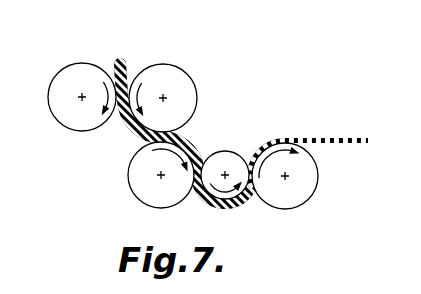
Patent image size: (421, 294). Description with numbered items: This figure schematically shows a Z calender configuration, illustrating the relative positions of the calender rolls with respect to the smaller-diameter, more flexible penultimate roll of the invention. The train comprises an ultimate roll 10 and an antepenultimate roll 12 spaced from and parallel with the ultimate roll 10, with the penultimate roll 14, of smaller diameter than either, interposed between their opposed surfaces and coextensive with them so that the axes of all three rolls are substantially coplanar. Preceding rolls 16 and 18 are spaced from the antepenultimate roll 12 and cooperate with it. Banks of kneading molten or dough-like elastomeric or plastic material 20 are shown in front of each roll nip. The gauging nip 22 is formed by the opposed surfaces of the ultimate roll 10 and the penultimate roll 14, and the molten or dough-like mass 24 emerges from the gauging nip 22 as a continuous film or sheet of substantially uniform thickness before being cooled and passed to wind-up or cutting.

The ultimate roll 10 is at (303, 193).
The antepenultimate roll 12 is at (147, 190).
The penultimate roll 14 is at (233, 162).
The preceding roll 16 is at (180, 80).
The preceding roll 18 is at (67, 77).
The banks of kneading material 20 is at (136, 141).
The gauging nip 22 is at (255, 148).
The molten or dough-like mass 24 is at (116, 60).